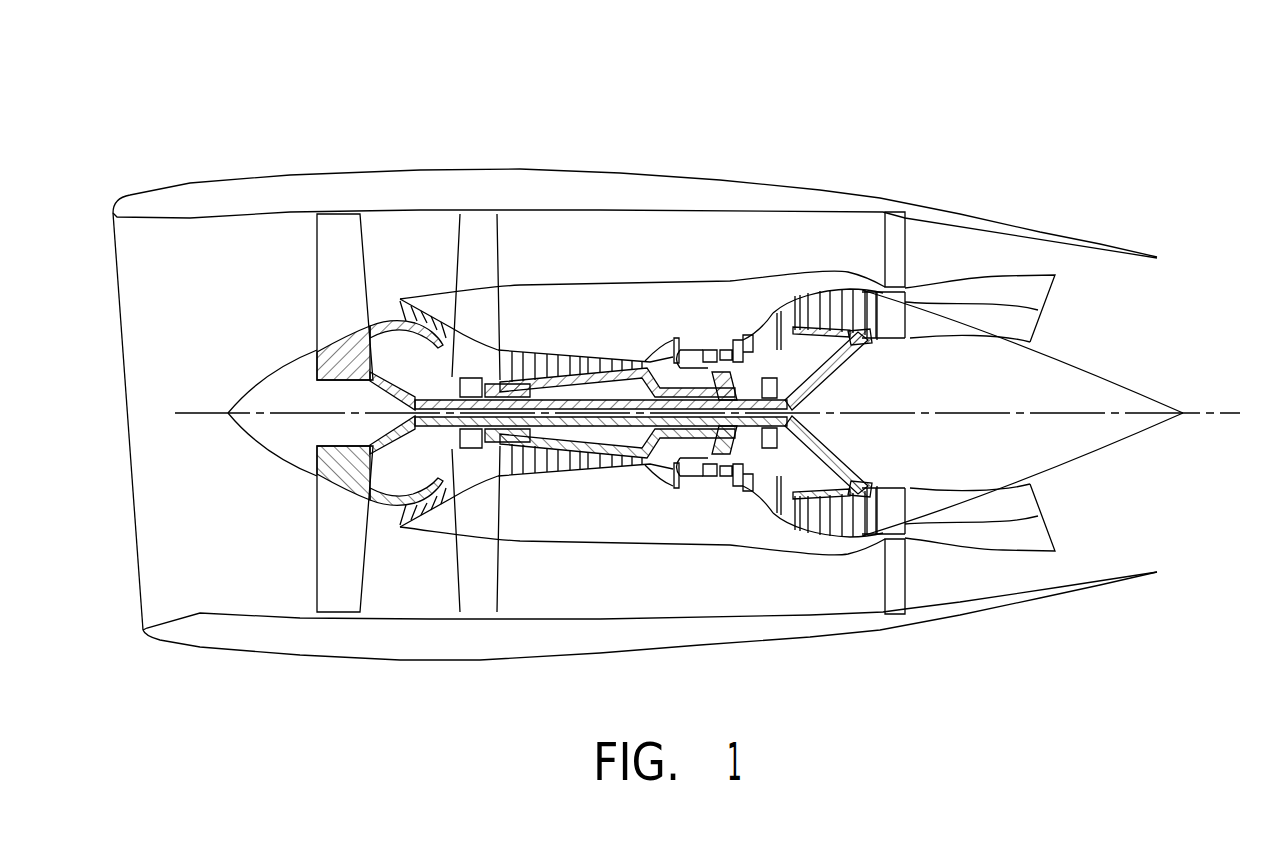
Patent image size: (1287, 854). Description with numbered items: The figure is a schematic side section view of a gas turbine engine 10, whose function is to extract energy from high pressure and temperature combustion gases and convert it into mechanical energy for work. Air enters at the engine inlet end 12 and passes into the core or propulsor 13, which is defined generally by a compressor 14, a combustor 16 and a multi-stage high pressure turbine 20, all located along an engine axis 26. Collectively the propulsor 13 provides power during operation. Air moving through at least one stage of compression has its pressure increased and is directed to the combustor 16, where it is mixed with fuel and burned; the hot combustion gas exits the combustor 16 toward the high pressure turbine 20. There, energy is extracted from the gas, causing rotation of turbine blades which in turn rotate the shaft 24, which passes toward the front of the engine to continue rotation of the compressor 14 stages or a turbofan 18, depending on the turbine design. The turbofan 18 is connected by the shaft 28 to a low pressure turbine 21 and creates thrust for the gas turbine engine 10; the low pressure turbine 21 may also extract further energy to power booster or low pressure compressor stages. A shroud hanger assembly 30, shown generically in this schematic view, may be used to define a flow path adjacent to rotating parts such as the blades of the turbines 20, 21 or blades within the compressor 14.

The gas turbine engine 10 is at (920, 150).
The engine inlet end 12 is at (130, 258).
The propulsor 13 is at (633, 272).
The compressor 14 is at (540, 347).
The combustor 16 is at (693, 338).
The turbofan 18 is at (283, 272).
The high pressure turbine 20 is at (747, 317).
The low pressure turbine 21 is at (860, 345).
The shaft 24 is at (667, 435).
The engine axis 26 is at (1240, 413).
The shaft 28 is at (587, 433).
The shroud hanger assembly 30 is at (723, 337).